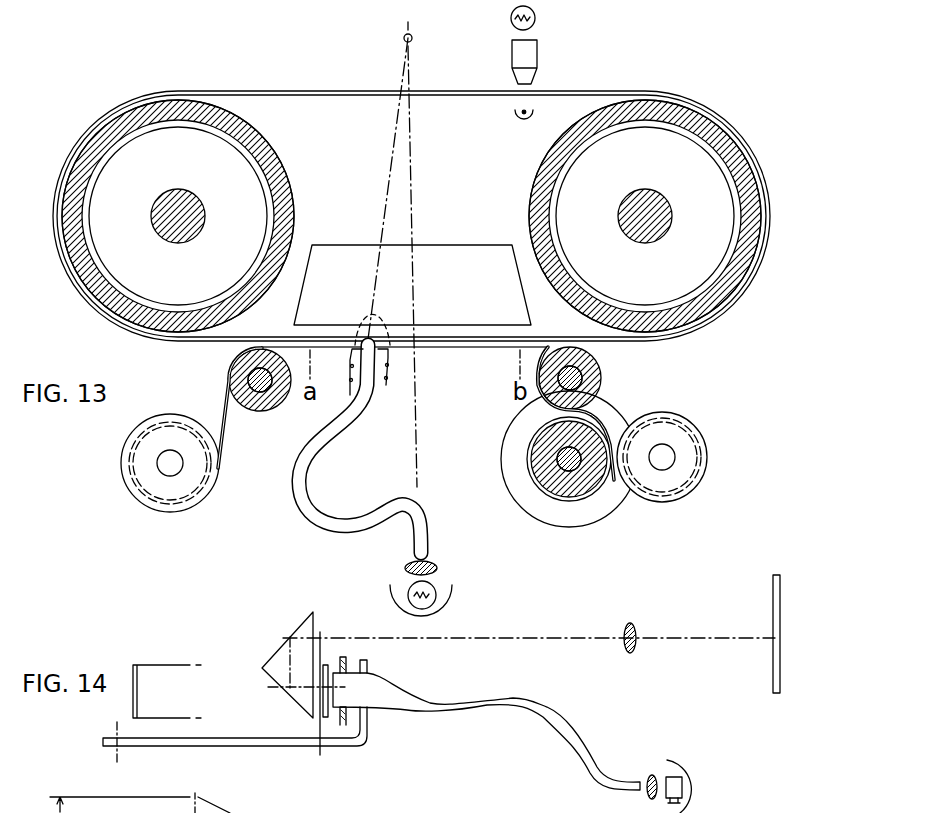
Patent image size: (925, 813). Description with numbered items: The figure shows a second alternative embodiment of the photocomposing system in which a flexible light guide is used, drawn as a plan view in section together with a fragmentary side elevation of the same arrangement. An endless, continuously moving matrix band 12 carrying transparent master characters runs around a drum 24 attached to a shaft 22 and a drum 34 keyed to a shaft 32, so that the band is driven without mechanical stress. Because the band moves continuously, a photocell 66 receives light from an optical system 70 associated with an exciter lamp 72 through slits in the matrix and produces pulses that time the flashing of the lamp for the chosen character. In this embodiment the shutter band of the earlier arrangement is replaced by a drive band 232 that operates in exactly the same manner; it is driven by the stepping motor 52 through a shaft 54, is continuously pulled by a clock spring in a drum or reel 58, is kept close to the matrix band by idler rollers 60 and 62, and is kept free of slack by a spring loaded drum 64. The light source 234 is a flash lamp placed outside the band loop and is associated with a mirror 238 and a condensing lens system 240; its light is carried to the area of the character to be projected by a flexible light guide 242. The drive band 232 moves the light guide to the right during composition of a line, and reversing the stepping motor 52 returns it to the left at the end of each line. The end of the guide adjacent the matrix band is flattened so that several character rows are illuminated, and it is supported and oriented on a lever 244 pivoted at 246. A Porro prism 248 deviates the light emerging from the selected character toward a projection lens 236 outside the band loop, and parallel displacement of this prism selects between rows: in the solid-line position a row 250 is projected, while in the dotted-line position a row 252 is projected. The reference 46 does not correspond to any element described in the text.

In FIG. 13, the matrix band 12 is at (283, 92).
In FIG. 14, the matrix band 12 is at (138, 689).
In FIG. 13, the shaft 22 is at (195, 199).
In FIG. 13, the drum 24 is at (93, 193).
In FIG. 13, the shaft 32 is at (662, 192).
In FIG. 13, the drum 34 is at (560, 187).
In FIG. 14, the viewing screen 46 is at (772, 603).
In FIG. 13, the stepping motor 52 is at (599, 518).
In FIG. 13, the shaft 54 is at (567, 456).
In FIG. 13, the drum or reel 58 is at (209, 498).
In FIG. 13, the idler roller 60 is at (240, 410).
In FIG. 13, the idler roller 62 is at (596, 377).
In FIG. 13, the spring loaded drum 64 is at (708, 470).
In FIG. 13, the photocell 66 is at (513, 114).
In FIG. 13, the optical system 70 is at (538, 47).
In FIG. 13, the exciter lamp 72 is at (536, 18).
In FIG. 13, the drive band 232 is at (427, 348).
In FIG. 13, the light source 234 is at (407, 583).
In FIG. 14, the light source 234 is at (671, 777).
In FIG. 14, the projection lens 236 is at (637, 625).
In FIG. 13, the mirror 238 is at (452, 596).
In FIG. 14, the mirror 238 is at (696, 776).
In FIG. 13, the condensing lens system 240 is at (406, 560).
In FIG. 14, the condensing lens system 240 is at (646, 795).
In FIG. 13, the flexible light guide 242 is at (298, 460).
In FIG. 14, the flexible light guide 242 is at (483, 703).
In FIG. 13, the lever 244 is at (391, 152).
In FIG. 14, the lever 244 is at (245, 748).
In FIG. 13, the pivot 246 is at (404, 41).
In FIG. 14, the pivot 246 is at (122, 752).
In FIG. 13, the Porro prism 248 is at (437, 245).
In FIG. 14, the Porro prism 248 is at (300, 628).
In FIG. 14, the row 250 is at (320, 640).
In FIG. 14, the row 252 is at (322, 750).